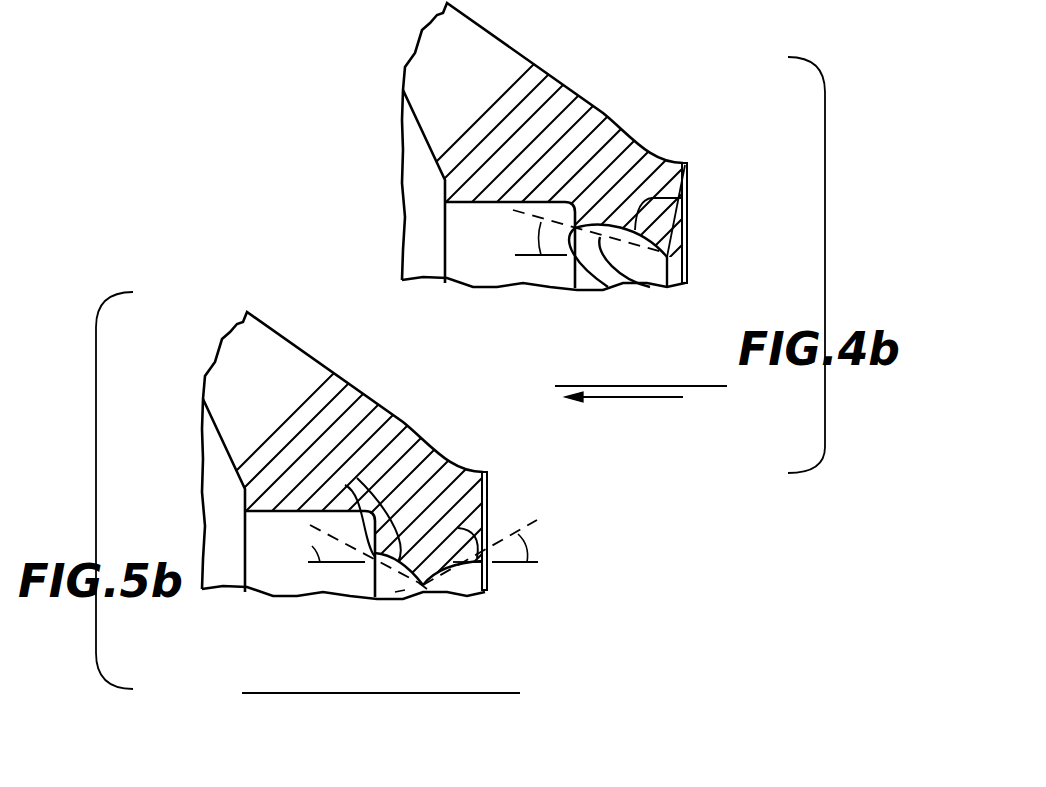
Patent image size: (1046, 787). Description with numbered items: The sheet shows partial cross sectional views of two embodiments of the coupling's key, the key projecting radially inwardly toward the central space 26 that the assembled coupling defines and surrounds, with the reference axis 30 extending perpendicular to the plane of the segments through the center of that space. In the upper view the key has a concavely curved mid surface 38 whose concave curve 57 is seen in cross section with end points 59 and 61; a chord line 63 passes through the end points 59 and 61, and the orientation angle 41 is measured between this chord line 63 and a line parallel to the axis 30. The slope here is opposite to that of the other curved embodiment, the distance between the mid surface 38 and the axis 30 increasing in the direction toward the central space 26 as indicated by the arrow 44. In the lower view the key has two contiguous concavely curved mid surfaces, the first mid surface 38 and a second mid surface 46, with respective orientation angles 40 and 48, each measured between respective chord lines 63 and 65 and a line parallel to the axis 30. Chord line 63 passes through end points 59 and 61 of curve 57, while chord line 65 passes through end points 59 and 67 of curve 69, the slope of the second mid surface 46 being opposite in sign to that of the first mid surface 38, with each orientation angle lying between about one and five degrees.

In FIG. 4B, the central space 26 is at (441, 341).
In FIG. 5B, the central space 26 is at (229, 659).
In FIG. 4B, the reference axis 30 is at (713, 387).
In FIG. 5B, the reference axis 30 is at (480, 694).
In FIG. 4B, the mid surface 38 is at (650, 277).
In FIG. 5B, the mid surface 38 is at (450, 590).
In FIG. 5B, the orientation angle 40 is at (532, 546).
In FIG. 4B, the orientation angle 41 is at (540, 225).
In FIG. 4B, the arrow 44 is at (623, 398).
In FIG. 5B, the second mid surface 46 is at (398, 590).
In FIG. 5B, the orientation angle 48 is at (320, 530).
In FIG. 4B, the concave curve 57 is at (690, 198).
In FIG. 5B, the concave curve 57 is at (483, 470).
In FIG. 4B, the end point 59 is at (603, 288).
In FIG. 5B, the end point 59 is at (423, 588).
In FIG. 4B, the end point 61 is at (667, 252).
In FIG. 5B, the end point 61 is at (472, 530).
In FIG. 4B, the chord line 63 is at (637, 284).
In FIG. 5B, the chord line 63 is at (486, 583).
In FIG. 5B, the chord line 65 is at (392, 577).
In FIG. 5B, the end point 67 is at (348, 488).
In FIG. 5B, the curve 69 is at (365, 472).